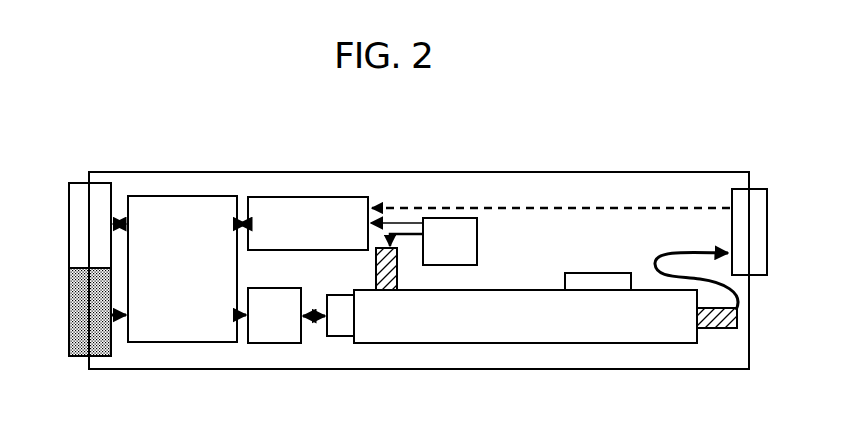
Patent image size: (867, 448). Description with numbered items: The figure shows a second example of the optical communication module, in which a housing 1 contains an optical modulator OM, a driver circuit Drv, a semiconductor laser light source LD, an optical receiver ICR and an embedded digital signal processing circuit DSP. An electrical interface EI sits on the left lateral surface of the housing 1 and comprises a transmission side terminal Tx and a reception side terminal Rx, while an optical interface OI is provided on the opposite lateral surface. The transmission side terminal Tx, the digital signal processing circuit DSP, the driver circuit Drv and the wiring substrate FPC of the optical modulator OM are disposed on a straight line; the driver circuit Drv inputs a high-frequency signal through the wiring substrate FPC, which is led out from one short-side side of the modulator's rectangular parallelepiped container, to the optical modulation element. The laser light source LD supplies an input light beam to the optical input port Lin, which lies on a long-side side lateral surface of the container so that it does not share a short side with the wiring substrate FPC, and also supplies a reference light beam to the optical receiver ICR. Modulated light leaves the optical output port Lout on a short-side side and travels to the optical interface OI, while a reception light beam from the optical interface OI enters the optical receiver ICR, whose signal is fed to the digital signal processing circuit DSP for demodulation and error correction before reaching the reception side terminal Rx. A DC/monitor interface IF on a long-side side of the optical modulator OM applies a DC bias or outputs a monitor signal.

The housing 1 is at (481, 172).
The electrical interface EI is at (74, 183).
The reception side terminal Rx is at (81, 225).
The transmission side terminal Tx is at (80, 312).
The digital signal processing circuit DSP is at (187, 269).
The optical receiver ICR is at (489, 223).
The driver circuit Drv is at (286, 315).
The wiring substrate FPC is at (342, 326).
The optical modulator OM is at (525, 316).
The DC/monitor interface IF is at (598, 267).
The semiconductor laser light source LD is at (424, 241).
The optical input port Lin is at (389, 291).
The optical output port Lout is at (722, 329).
The optical interface OI is at (757, 189).